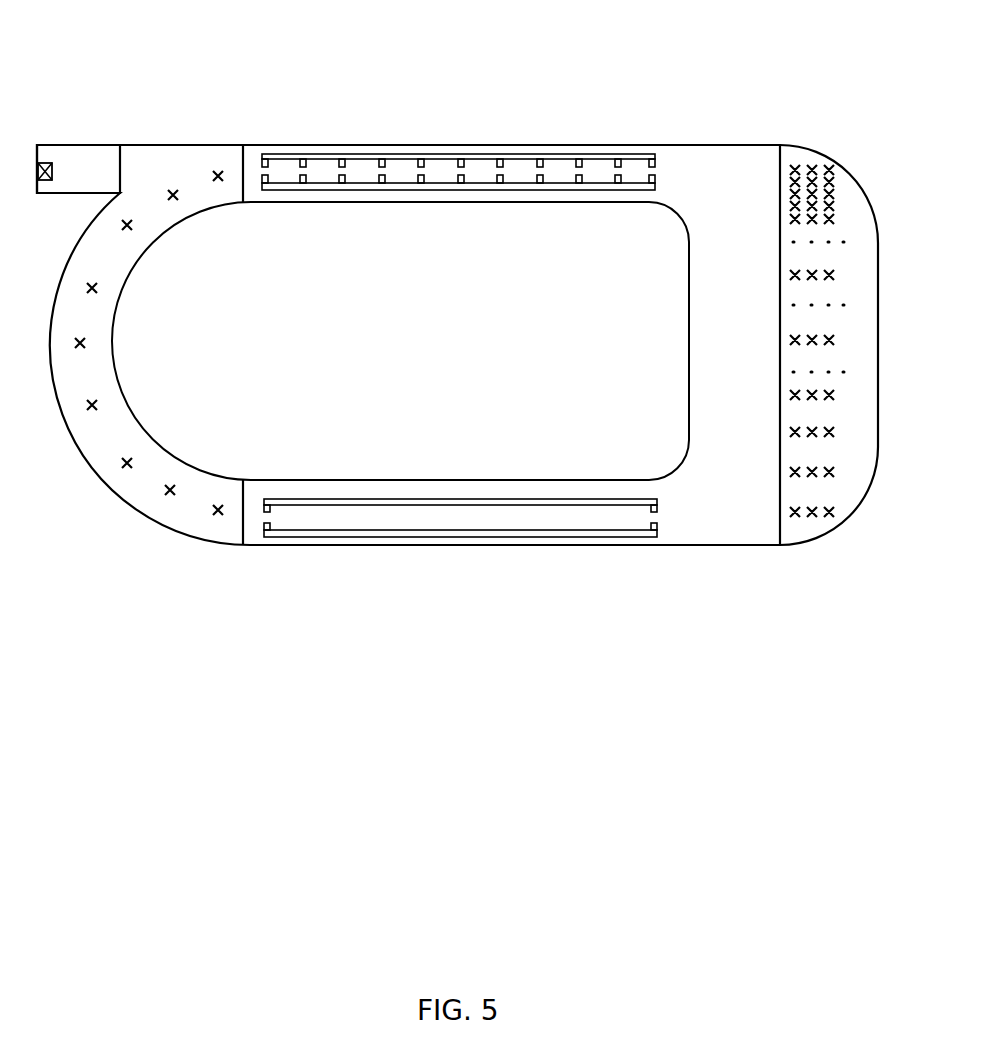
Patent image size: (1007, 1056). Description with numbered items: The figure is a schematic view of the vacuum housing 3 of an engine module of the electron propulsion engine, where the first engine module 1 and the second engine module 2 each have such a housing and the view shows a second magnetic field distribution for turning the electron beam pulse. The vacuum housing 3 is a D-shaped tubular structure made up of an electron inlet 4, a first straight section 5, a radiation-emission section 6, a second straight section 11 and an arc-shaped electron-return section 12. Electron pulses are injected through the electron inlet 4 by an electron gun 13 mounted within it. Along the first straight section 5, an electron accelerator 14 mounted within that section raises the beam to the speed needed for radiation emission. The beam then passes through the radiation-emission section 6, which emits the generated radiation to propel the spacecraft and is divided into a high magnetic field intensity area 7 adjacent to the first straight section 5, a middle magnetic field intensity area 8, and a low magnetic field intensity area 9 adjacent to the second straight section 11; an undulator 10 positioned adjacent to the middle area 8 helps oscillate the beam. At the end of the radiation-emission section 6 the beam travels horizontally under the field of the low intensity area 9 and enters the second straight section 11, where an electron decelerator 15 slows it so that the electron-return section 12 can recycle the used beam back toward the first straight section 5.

The first engine module 1 is at (457, 280).
The second engine module 2 is at (403, 58).
The vacuum housing 3 is at (690, 350).
The electron inlet 4 is at (100, 155).
The first straight section 5 is at (498, 132).
The radiation-emission section 6 is at (752, 313).
The high magnetic field intensity (Hi-MFI) area 7 is at (853, 200).
The middle magnetic field intensity (Mi-MFI) area 8 is at (870, 339).
The low magnetic field intensity (Lo-MFI) area 9 is at (850, 490).
The undulator 10 is at (853, 350).
The second straight section 11 is at (500, 558).
The electron-return section 12 is at (92, 452).
The electron gun 13 is at (52, 172).
The electron accelerator 14 is at (657, 158).
The electron decelerator 15 is at (660, 502).